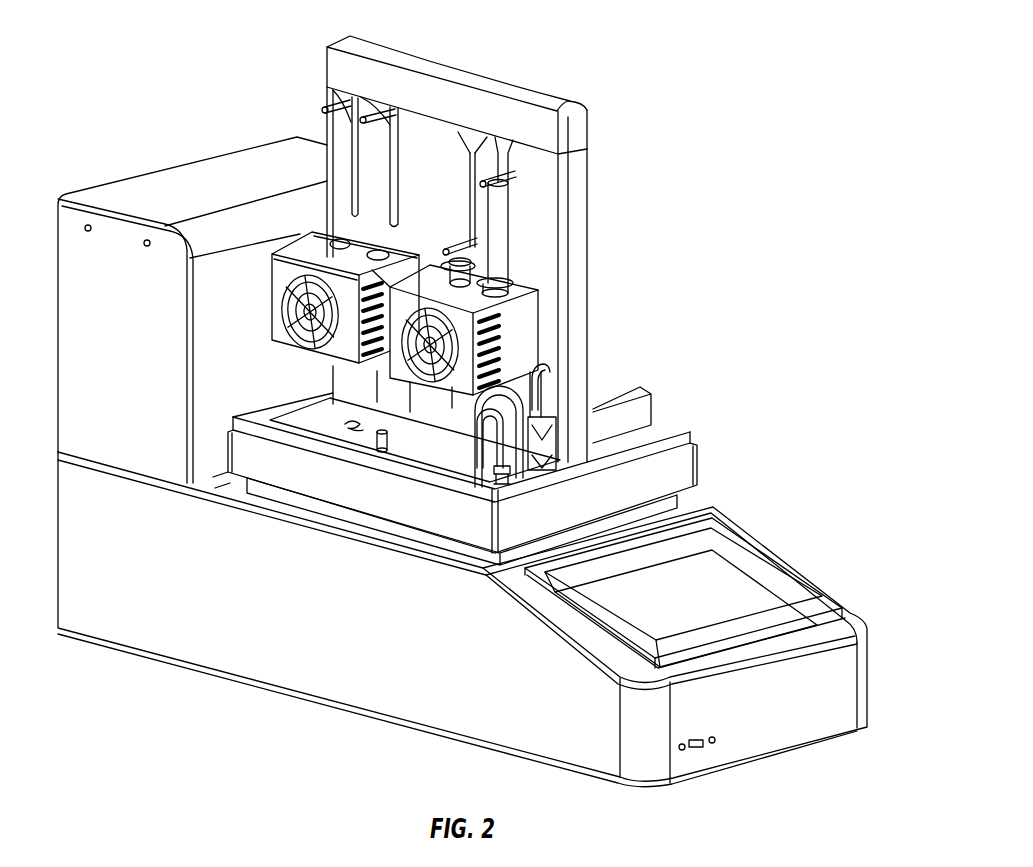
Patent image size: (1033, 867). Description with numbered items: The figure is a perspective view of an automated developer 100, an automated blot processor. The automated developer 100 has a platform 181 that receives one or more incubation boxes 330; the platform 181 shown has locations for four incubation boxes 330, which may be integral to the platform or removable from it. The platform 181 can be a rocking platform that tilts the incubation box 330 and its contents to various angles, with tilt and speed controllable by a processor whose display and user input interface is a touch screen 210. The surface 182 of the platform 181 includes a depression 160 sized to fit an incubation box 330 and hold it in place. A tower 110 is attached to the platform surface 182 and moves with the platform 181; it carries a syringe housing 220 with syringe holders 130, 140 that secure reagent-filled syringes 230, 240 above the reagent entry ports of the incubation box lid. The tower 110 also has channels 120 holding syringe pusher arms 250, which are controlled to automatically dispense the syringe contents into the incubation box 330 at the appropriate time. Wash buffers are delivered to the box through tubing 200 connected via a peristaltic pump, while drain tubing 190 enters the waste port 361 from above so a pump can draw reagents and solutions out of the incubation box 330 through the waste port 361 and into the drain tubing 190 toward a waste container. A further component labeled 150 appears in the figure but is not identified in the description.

The automated developer 100 is at (659, 47).
The tower 110 is at (327, 67).
The channels 120 is at (326, 146).
The syringe holder 130 is at (307, 236).
The syringe holder 140 is at (394, 250).
The fan heater unit 150 is at (285, 305).
The depression 160 is at (297, 423).
The platform 181 is at (273, 465).
The surface of the platform 182 is at (670, 427).
The drain tubing 190 is at (683, 497).
The tubing 200 is at (650, 460).
The touch screen 210 is at (730, 593).
The syringe housing 220 is at (517, 347).
The syringe 230 is at (493, 273).
The syringe 240 is at (453, 250).
The syringe pusher arm 250 is at (503, 158).
The incubation box 330 is at (642, 413).
The waste port 361 is at (478, 462).